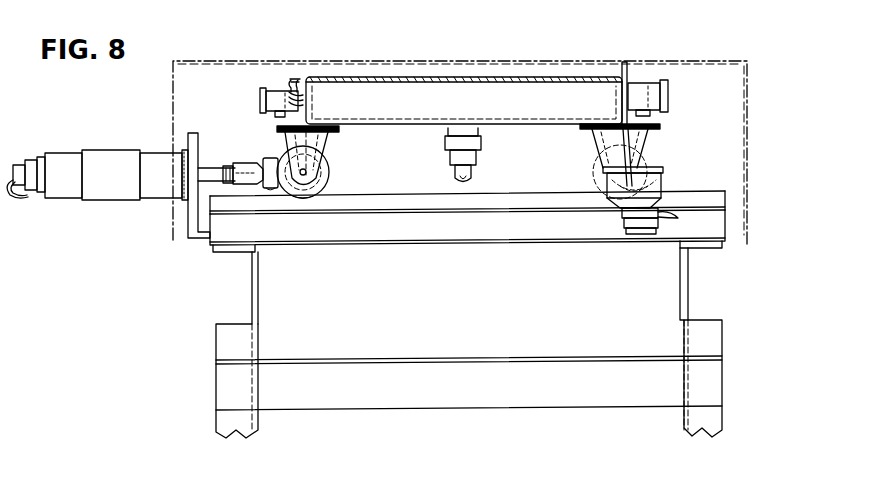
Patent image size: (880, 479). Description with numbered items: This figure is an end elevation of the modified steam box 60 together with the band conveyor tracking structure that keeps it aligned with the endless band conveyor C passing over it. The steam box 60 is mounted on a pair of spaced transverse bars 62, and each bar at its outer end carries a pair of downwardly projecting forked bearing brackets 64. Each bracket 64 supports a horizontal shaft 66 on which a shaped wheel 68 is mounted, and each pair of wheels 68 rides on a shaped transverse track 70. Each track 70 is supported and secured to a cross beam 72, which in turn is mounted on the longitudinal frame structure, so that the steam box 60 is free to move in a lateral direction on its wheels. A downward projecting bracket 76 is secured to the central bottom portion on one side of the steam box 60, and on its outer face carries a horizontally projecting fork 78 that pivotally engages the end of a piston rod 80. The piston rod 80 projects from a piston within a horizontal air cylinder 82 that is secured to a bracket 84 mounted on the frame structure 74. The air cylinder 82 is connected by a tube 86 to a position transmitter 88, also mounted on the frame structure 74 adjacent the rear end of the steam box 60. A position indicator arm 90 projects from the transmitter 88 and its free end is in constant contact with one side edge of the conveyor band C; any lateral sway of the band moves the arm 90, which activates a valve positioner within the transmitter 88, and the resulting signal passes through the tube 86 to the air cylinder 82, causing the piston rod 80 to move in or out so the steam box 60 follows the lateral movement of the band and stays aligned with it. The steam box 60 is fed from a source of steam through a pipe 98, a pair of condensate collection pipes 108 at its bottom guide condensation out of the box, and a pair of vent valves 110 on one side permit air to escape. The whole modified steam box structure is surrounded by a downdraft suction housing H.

The endless band conveyor C is at (524, 77).
The downdraft suction housing H is at (752, 212).
The modified steam box 60 is at (531, 144).
The transverse bar 62 is at (660, 127).
The forked bearing bracket 64 is at (326, 148).
The horizontal shaft 66 is at (322, 174).
The shaped wheel 68 is at (319, 200).
The transverse track 70 is at (369, 198).
The cross beam 72 is at (483, 243).
The frame structure 74 is at (250, 295).
The downward projecting bracket 76 is at (332, 134).
The horizontally projecting fork 78 is at (268, 192).
The piston rod 80 is at (236, 168).
The horizontal air cylinder 82 is at (113, 151).
The bracket 84 is at (194, 246).
The tube 86 is at (29, 199).
The position transmitter 88 is at (628, 212).
The position indicator arm 90 is at (630, 66).
The pipe 98 is at (278, 115).
The condensate collection pipe 108 is at (455, 177).
The vent valve 110 is at (297, 78).